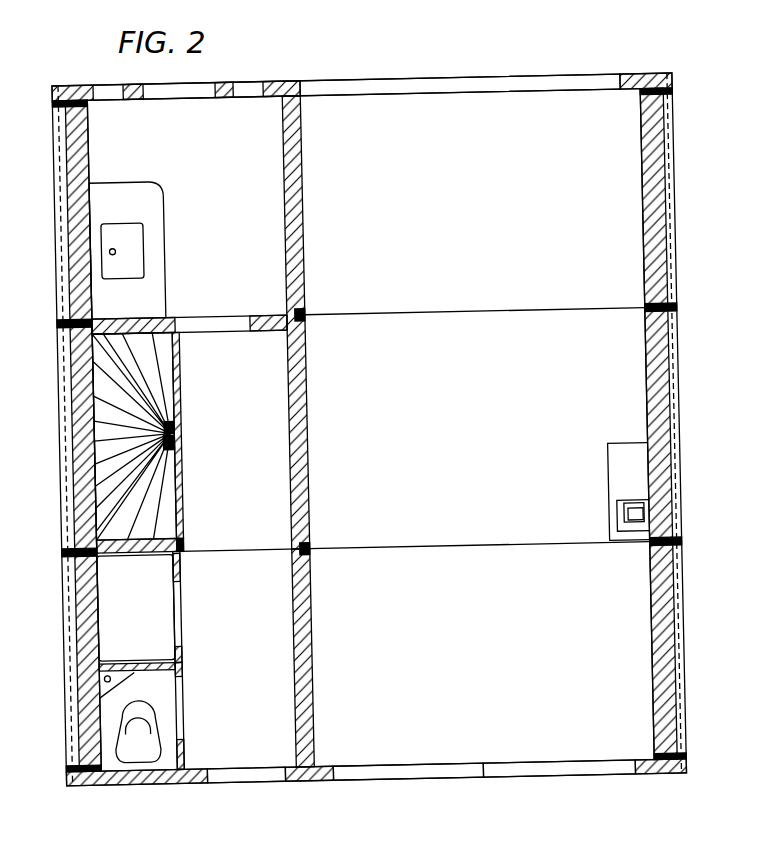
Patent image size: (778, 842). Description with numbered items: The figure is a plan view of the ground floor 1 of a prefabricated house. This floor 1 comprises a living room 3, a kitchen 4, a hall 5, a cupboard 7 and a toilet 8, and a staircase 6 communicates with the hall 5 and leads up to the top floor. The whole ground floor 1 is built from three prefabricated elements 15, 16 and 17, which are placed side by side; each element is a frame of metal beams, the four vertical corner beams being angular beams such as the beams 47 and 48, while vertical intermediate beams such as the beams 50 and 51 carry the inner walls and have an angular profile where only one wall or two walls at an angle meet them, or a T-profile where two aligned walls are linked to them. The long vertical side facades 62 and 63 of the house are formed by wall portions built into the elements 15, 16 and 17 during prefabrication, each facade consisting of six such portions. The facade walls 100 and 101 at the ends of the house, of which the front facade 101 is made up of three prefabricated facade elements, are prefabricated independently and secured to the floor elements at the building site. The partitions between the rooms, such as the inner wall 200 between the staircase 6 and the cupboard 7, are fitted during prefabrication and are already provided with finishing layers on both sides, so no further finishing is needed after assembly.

The ground floor 1 is at (322, 779).
The living room 3 is at (579, 746).
The kitchen 4 is at (247, 108).
The hall 5 is at (254, 758).
The staircase 6 is at (166, 371).
The cupboard 7 is at (157, 617).
The toilet 8 is at (160, 703).
The element 15 is at (428, 773).
The element 16 is at (456, 318).
The element 17 is at (517, 78).
The vertical angular beam 47 is at (93, 784).
The vertical angular beam 48 is at (98, 571).
The vertical intermediate beam 50 is at (316, 760).
The vertical intermediate beam 51 is at (309, 556).
The side facade 62 is at (62, 470).
The side facade 63 is at (725, 474).
The facade wall 100 is at (646, 55).
The front facade 101 is at (519, 775).
The inner wall 200 is at (174, 552).